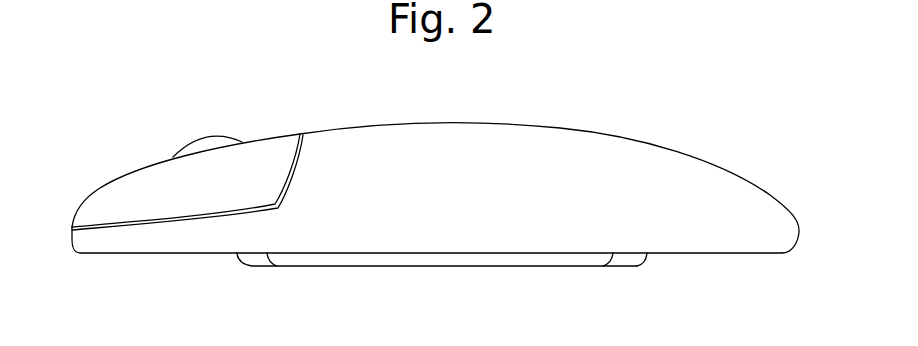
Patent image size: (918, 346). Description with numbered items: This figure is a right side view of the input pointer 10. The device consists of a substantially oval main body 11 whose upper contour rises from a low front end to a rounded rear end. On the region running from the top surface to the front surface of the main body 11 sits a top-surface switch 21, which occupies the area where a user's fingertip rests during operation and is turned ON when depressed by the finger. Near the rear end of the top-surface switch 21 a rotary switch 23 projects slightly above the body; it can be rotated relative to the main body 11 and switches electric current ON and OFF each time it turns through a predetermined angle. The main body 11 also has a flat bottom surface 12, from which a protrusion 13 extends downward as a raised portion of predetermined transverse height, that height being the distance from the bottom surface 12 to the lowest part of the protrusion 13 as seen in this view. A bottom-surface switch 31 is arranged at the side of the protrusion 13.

The input pointer 10 is at (655, 120).
The main body 11 is at (493, 137).
The bottom surface 12 is at (132, 257).
The protrusion 13 is at (258, 258).
The top-surface switch 21 is at (118, 195).
The rotary switch 23 is at (205, 133).
The bottom-surface switch 31 is at (587, 260).